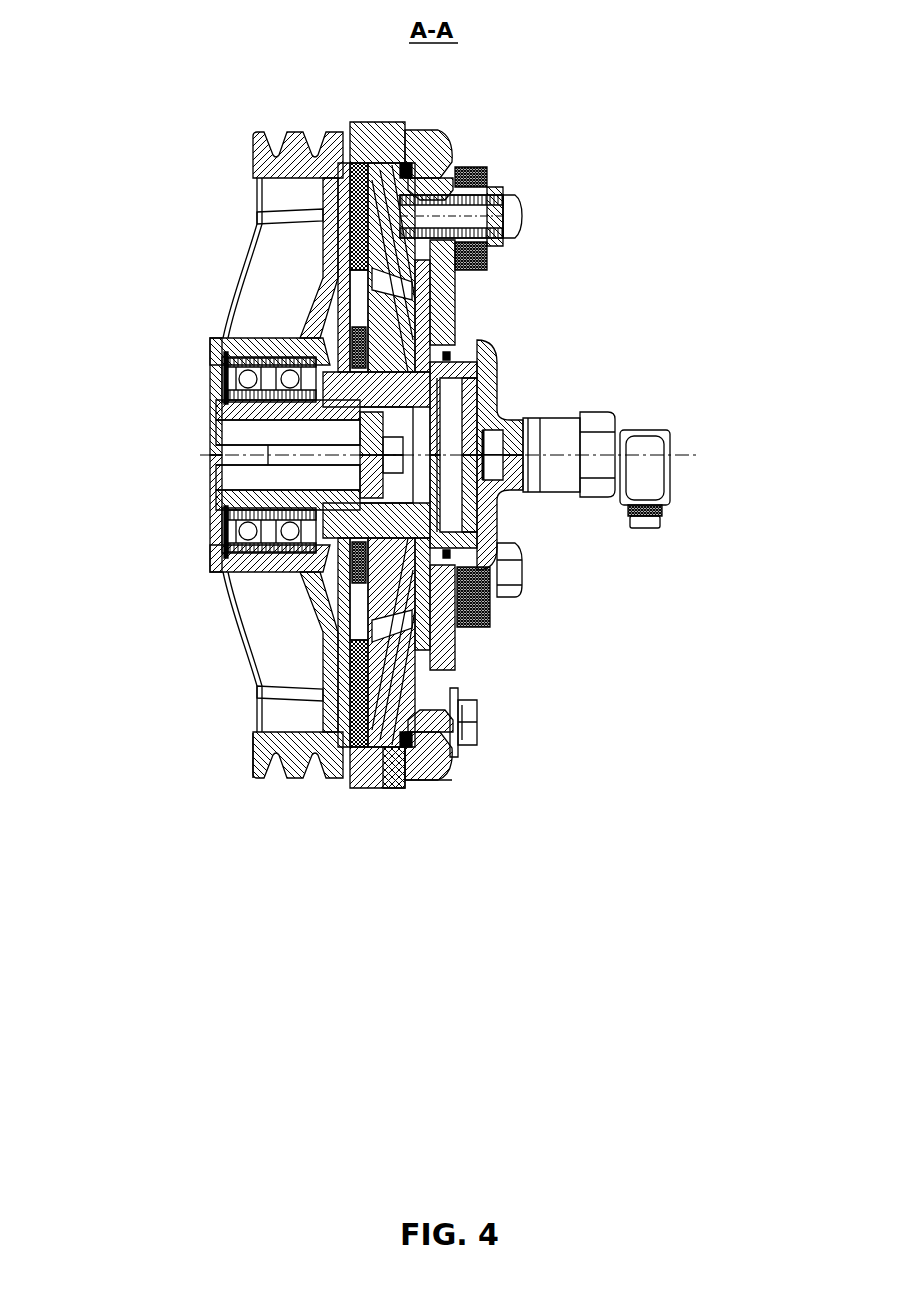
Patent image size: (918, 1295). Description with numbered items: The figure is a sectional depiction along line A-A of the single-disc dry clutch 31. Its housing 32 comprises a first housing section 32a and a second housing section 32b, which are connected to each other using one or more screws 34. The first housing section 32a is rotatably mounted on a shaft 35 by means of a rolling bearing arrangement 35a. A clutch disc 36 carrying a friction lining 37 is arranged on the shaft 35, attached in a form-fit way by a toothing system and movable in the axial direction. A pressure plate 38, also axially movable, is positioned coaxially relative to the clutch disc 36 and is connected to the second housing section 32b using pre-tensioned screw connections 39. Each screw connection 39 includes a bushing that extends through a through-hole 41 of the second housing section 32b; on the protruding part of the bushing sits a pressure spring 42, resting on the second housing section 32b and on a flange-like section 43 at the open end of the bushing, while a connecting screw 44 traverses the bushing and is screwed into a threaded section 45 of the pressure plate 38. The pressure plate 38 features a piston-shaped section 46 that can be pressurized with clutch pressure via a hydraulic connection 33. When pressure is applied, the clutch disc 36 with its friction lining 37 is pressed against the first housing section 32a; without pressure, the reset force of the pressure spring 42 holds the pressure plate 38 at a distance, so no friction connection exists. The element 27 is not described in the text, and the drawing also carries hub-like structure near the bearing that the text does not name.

The hub 27 is at (303, 135).
The single-disc dry clutch 31 is at (220, 154).
The housing 32 is at (366, 790).
The first housing section 32a is at (258, 745).
The second housing section 32b is at (443, 782).
The hydraulic connection 33 is at (652, 472).
The screw 34 is at (480, 724).
The shaft 35 is at (230, 405).
The rolling bearing arrangement 35a is at (240, 348).
The clutch disc 36 is at (470, 370).
The friction lining 37 is at (357, 165).
The pressure plate 38 is at (385, 735).
The screw connection 39 is at (533, 200).
The through-hole 41 is at (445, 150).
The pressure spring 42 is at (492, 178).
The flange-like section 43 is at (497, 250).
The connecting screw 44 is at (520, 208).
The threaded section 45 is at (395, 170).
The piston-shaped section 46 is at (490, 498).